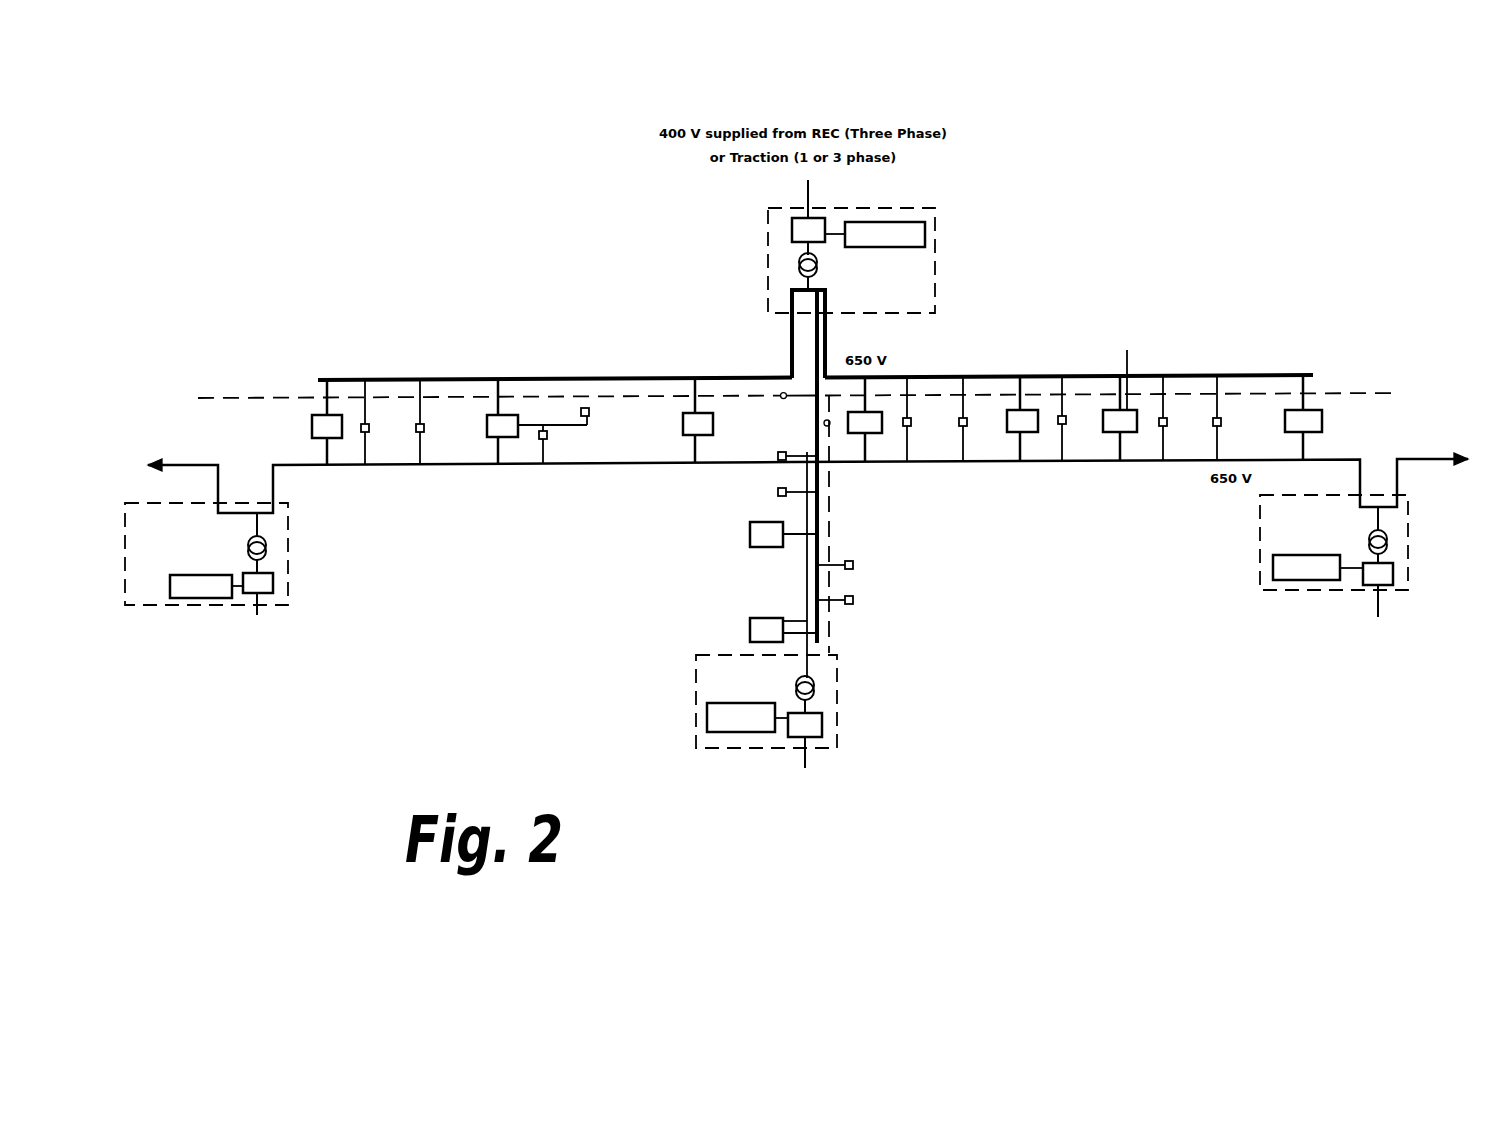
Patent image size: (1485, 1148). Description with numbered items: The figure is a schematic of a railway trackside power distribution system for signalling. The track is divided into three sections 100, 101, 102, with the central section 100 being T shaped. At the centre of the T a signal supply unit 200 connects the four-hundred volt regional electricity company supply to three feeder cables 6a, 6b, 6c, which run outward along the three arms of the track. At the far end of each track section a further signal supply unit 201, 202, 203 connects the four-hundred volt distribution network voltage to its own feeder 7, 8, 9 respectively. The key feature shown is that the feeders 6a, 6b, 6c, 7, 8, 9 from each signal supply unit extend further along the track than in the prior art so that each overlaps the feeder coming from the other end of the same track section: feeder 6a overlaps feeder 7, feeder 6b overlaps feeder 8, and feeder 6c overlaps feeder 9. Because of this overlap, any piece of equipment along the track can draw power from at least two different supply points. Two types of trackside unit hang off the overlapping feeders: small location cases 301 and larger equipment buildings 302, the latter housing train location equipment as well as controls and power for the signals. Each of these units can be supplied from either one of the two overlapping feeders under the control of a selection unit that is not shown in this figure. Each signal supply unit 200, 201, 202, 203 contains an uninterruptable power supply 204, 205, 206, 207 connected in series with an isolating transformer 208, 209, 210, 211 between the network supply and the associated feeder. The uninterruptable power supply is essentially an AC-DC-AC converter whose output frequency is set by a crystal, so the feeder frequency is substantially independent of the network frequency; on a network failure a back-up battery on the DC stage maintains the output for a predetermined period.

The feeder 6a is at (565, 378).
The feeder 6b is at (940, 375).
The feeder 6c is at (815, 422).
The feeder 7 is at (468, 465).
The feeder 8 is at (1090, 462).
The feeder 9 is at (807, 565).
The track section 100 is at (252, 397).
The track section 101 is at (1210, 393).
The track section 102 is at (832, 543).
The signal supply unit 200 is at (935, 242).
The signal supply unit 201 is at (200, 607).
The signal supply unit 202 is at (1258, 548).
The signal supply unit 203 is at (838, 700).
The uninterruptable power supply 204 is at (792, 230).
The uninterruptable power supply 205 is at (275, 585).
The uninterruptable power supply 206 is at (790, 725).
The uninterruptable power supply 207 is at (1362, 578).
The isolating transformer 208 is at (800, 268).
The isolating transformer 209 is at (266, 551).
The isolating transformer 210 is at (1370, 545).
The isolating transformer 211 is at (812, 683).
The location case 301 is at (418, 428).
The equipment building 302 is at (340, 427).